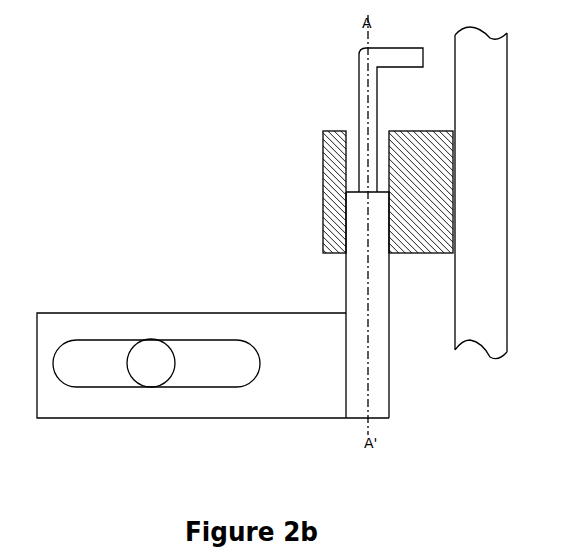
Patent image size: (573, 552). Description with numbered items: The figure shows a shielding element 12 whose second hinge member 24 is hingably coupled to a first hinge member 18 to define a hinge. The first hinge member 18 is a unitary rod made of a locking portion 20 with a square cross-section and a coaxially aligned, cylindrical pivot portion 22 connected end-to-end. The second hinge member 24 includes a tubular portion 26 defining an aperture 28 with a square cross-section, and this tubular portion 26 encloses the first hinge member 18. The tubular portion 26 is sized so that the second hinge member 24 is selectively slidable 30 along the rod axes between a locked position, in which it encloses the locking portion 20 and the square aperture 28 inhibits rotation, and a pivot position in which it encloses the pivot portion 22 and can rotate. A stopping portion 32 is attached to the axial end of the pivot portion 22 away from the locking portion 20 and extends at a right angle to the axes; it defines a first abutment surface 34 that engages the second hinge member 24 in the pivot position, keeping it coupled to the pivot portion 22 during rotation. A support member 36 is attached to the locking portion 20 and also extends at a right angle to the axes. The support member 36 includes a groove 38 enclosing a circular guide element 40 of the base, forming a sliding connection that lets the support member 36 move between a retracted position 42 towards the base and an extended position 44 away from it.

The shielding element 12 is at (480, 322).
The first hinge member 18 is at (330, 265).
The locking portion 20 is at (353, 272).
The pivot portion 22 is at (363, 78).
The second hinge member 24 is at (413, 240).
The tubular portion 26 is at (345, 128).
The aperture 28 is at (382, 138).
The selectively slidable 30 is at (298, 156).
The stopping portion 32 is at (400, 55).
The first abutment surface 34 is at (408, 69).
The support member 36 is at (258, 407).
The groove 38 is at (100, 368).
The circular guide element 40 is at (153, 368).
The retracted position 42 is at (218, 287).
The extended position 44 is at (234, 287).